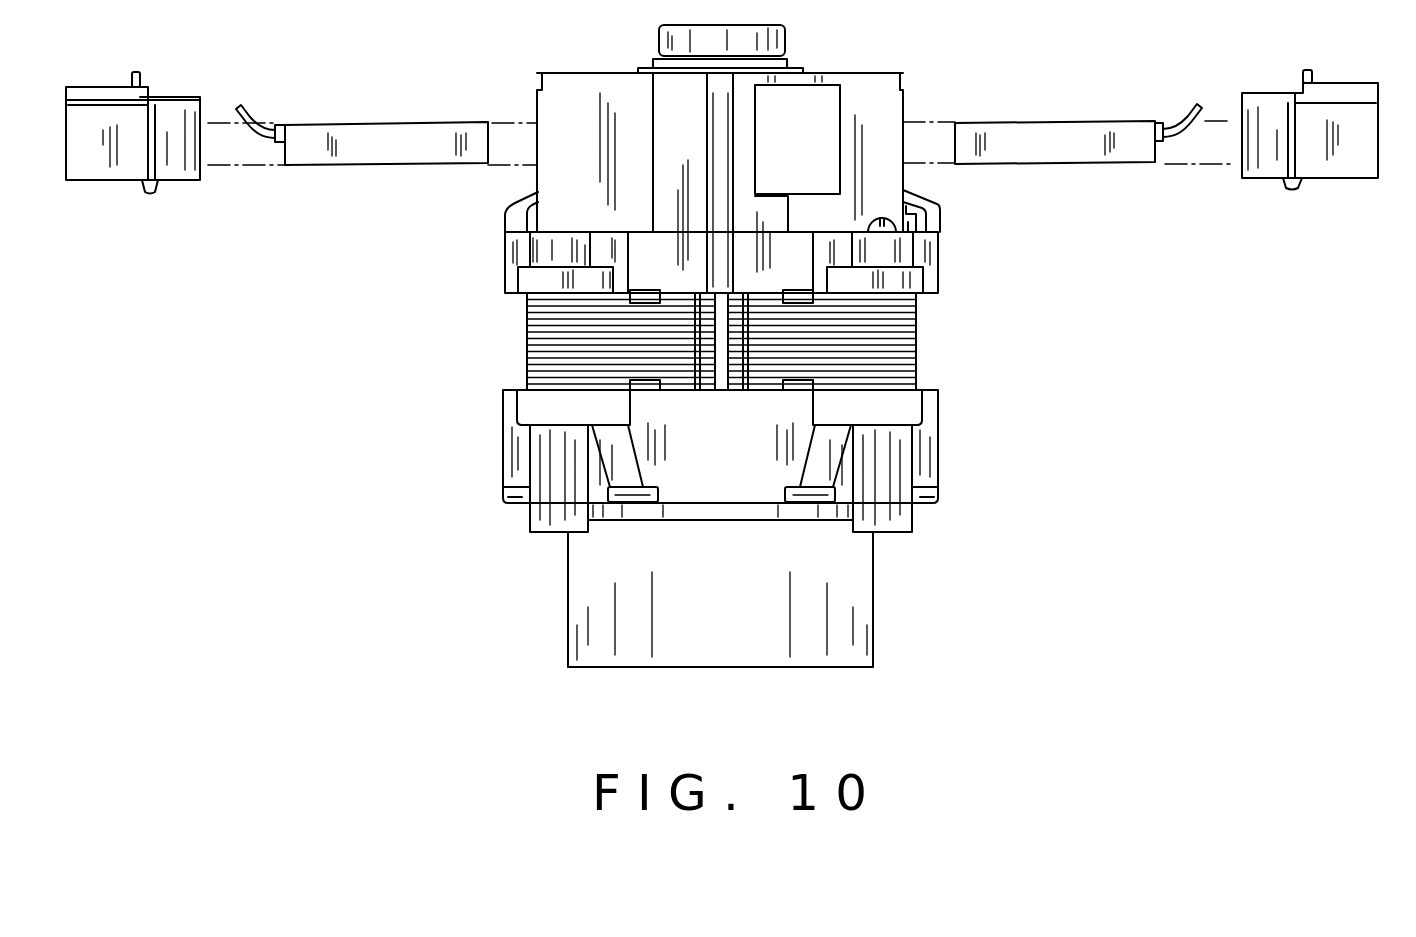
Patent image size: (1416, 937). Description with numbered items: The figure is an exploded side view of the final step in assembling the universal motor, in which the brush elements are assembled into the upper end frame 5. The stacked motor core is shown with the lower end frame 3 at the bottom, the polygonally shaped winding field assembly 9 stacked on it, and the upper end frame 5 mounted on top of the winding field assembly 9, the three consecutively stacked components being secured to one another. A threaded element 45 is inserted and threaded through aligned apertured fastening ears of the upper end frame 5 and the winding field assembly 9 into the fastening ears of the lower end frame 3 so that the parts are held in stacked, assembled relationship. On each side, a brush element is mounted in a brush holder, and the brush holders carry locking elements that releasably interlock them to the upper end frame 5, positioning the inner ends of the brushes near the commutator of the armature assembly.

The lower end frame 3 is at (496, 465).
The upper end frame 5 is at (496, 239).
The winding field assembly 9 is at (518, 324).
The threaded element 45 is at (938, 204).